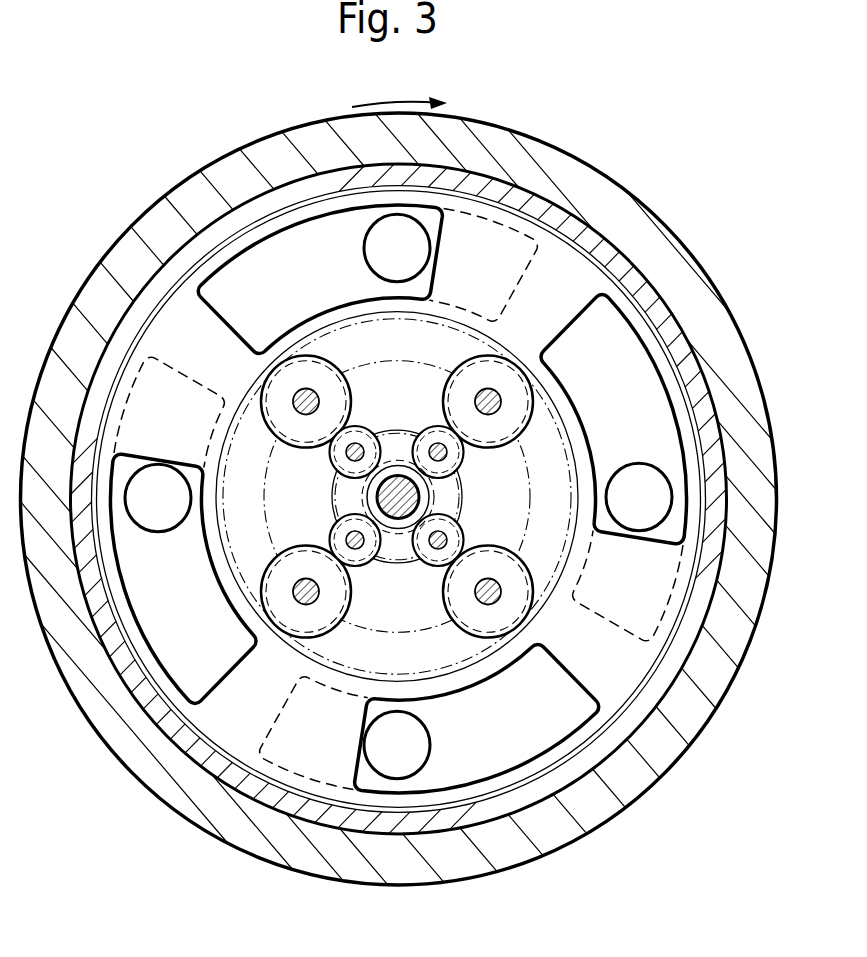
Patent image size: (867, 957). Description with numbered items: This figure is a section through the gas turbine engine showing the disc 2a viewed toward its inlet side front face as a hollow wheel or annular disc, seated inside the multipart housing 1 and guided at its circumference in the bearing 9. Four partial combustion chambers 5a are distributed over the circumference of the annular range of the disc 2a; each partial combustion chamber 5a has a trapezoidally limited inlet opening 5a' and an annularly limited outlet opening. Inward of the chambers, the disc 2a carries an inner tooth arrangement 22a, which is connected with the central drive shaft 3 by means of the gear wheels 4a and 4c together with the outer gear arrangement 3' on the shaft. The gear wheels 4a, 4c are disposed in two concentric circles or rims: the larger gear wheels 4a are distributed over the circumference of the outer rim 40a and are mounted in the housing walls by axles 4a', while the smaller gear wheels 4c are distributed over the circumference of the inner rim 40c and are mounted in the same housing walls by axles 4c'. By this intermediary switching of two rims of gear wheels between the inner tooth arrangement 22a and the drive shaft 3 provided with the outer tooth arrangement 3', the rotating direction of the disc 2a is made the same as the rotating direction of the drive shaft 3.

The housing 1 is at (505, 158).
The bearing 9 is at (539, 196).
The partial combustion chamber 5a is at (354, 499).
The inlet opening 5a' is at (614, 419).
The disc 2a is at (199, 351).
The inner tooth arrangement 22a is at (458, 343).
The rim 40a is at (367, 352).
The rim 40c is at (397, 428).
The gear wheel 4a is at (360, 473).
The axle 4a' is at (402, 473).
The gear wheel 4c is at (397, 521).
The axle 4c' is at (437, 496).
The drive shaft 3 is at (352, 506).
The outer gear arrangement 3' is at (360, 497).